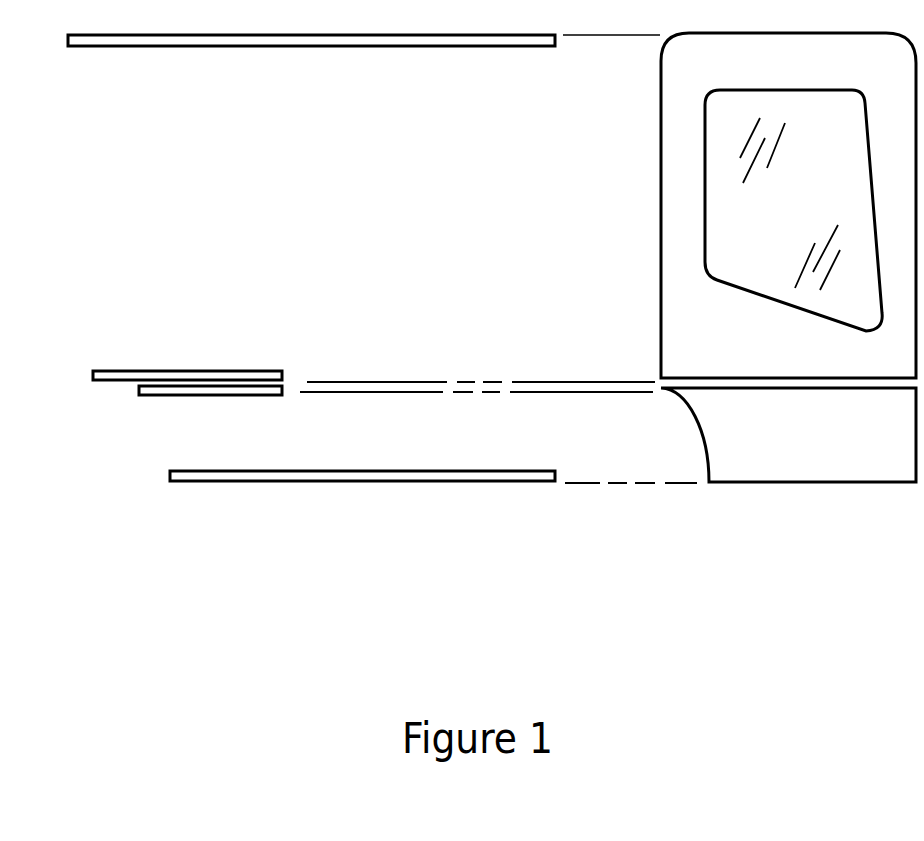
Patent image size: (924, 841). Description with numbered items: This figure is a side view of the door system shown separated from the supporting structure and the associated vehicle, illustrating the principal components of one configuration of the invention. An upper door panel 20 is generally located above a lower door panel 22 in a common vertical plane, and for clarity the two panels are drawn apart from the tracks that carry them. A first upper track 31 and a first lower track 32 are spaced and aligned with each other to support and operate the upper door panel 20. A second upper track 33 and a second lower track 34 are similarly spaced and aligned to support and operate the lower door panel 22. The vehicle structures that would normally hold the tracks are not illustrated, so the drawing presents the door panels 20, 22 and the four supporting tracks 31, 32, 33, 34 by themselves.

The upper door panel 20 is at (660, 118).
The lower door panel 22 is at (784, 482).
The first upper track 31 is at (173, 46).
The first lower track 32 is at (220, 371).
The second upper track 33 is at (270, 395).
The second lower track 34 is at (488, 481).